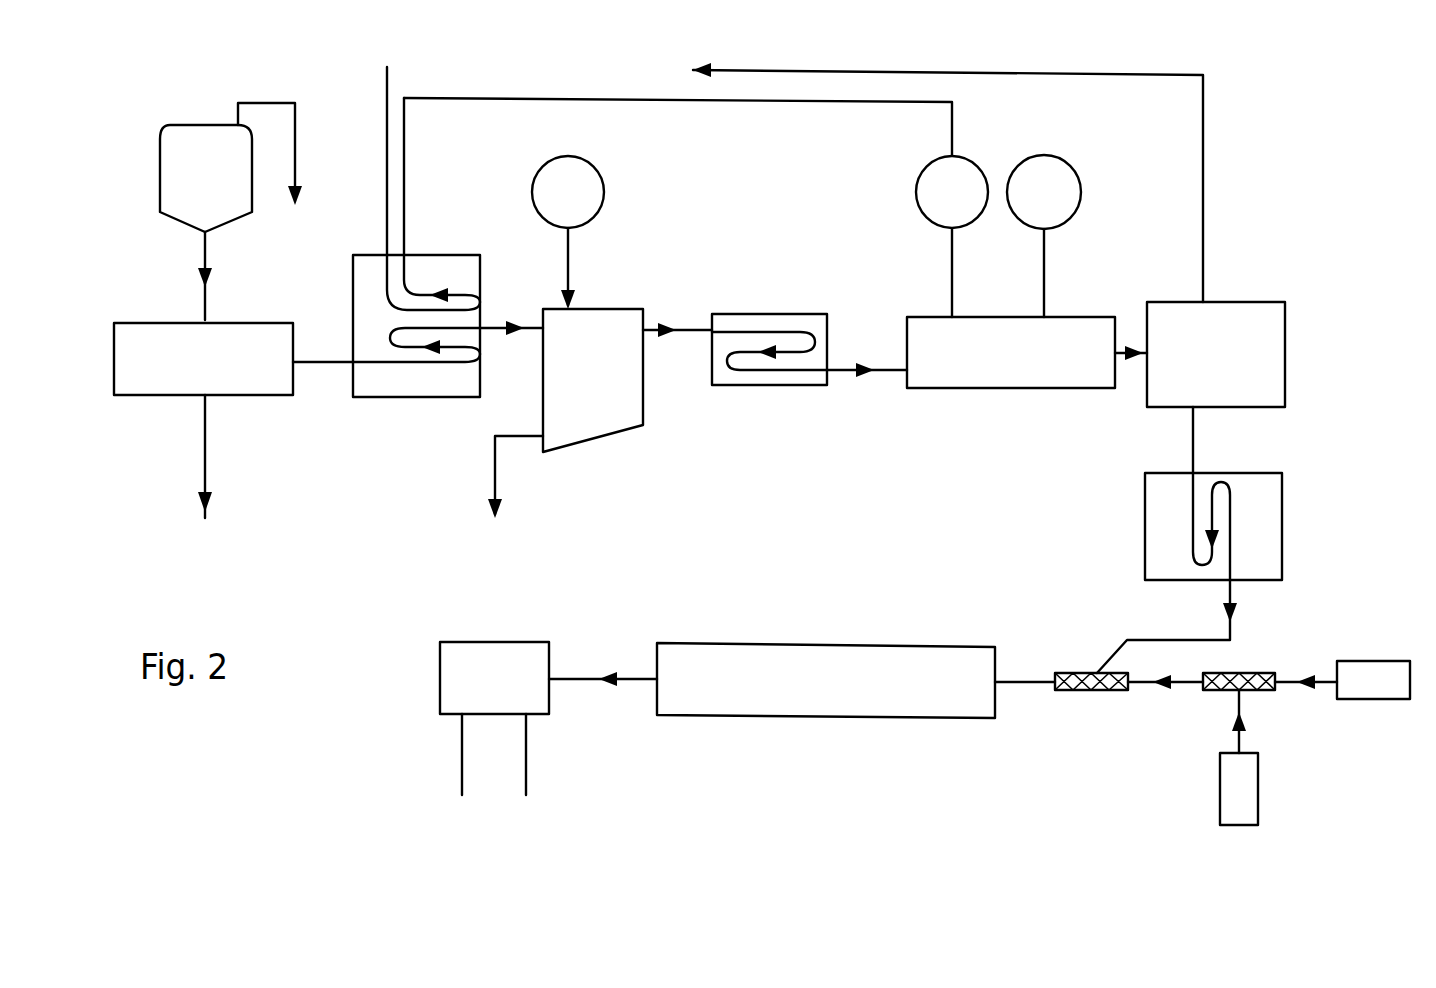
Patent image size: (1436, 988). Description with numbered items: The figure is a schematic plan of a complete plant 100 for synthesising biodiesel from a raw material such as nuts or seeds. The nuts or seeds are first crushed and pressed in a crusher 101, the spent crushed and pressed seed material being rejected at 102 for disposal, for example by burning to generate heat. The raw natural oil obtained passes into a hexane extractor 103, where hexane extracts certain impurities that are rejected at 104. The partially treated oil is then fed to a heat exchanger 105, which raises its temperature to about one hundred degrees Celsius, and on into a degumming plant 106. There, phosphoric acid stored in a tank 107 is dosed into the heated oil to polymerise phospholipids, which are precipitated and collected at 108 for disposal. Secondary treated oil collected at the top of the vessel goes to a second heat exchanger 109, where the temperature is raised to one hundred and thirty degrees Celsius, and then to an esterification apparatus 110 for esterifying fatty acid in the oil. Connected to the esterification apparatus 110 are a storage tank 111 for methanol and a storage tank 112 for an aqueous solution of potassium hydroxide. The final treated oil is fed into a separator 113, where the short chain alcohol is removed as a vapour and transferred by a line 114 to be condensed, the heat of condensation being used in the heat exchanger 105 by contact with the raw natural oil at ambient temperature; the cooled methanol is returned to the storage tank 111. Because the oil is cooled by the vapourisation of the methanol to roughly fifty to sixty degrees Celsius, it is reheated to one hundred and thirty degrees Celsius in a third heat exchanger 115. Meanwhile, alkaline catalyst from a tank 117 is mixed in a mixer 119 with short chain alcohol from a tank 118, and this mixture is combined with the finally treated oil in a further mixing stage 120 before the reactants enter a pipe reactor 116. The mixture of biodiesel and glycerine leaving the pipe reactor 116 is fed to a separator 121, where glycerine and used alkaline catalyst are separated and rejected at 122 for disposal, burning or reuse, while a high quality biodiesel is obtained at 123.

The process plant 100 is at (1230, 102).
The crusher 101 is at (170, 128).
The rejected crushed and pressed seed material 102 is at (275, 167).
The hexane extractor 103 is at (231, 395).
The rejected impurities 104 is at (205, 455).
The heat exchanger 105 is at (416, 397).
The degumming plant 106 is at (593, 440).
The tank 107 is at (604, 198).
The collection point for precipitated phospholipids 108 is at (509, 495).
The second heat exchanger 109 is at (735, 385).
The esterification apparatus 110 is at (1012, 388).
The storage tank for methanol 111 is at (960, 157).
The storage tank for aqueous potassium hydroxide solution 112 is at (1055, 157).
The separator 113 is at (1230, 302).
The line 114 is at (990, 73).
The third heat exchanger 115 is at (1282, 506).
The pipe reactor 116 is at (825, 643).
The tank 117 is at (1373, 699).
The tank 118 is at (1220, 788).
The mixer 119 is at (1245, 673).
The further mixing stage 120 is at (1088, 690).
The separator 121 is at (491, 642).
The rejection point for glycerine and used alkaline catalyst 122 is at (523, 773).
The biodiesel outlet 123 is at (459, 773).